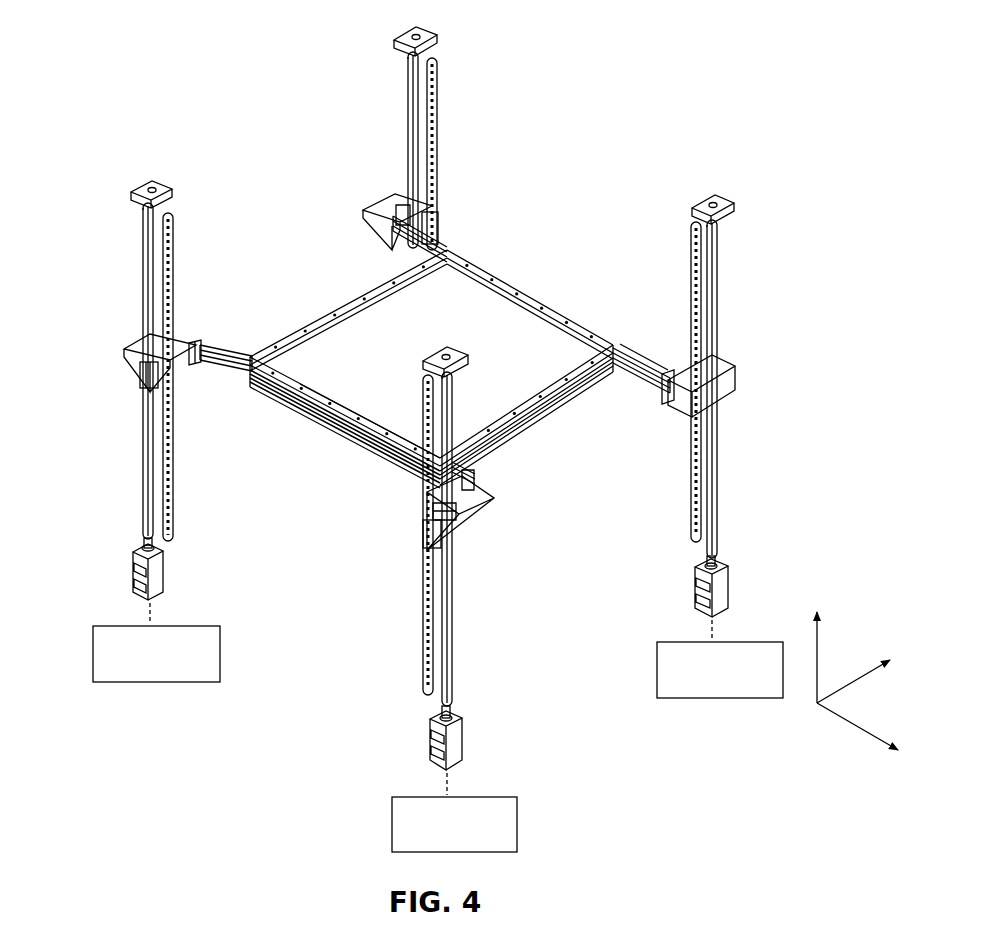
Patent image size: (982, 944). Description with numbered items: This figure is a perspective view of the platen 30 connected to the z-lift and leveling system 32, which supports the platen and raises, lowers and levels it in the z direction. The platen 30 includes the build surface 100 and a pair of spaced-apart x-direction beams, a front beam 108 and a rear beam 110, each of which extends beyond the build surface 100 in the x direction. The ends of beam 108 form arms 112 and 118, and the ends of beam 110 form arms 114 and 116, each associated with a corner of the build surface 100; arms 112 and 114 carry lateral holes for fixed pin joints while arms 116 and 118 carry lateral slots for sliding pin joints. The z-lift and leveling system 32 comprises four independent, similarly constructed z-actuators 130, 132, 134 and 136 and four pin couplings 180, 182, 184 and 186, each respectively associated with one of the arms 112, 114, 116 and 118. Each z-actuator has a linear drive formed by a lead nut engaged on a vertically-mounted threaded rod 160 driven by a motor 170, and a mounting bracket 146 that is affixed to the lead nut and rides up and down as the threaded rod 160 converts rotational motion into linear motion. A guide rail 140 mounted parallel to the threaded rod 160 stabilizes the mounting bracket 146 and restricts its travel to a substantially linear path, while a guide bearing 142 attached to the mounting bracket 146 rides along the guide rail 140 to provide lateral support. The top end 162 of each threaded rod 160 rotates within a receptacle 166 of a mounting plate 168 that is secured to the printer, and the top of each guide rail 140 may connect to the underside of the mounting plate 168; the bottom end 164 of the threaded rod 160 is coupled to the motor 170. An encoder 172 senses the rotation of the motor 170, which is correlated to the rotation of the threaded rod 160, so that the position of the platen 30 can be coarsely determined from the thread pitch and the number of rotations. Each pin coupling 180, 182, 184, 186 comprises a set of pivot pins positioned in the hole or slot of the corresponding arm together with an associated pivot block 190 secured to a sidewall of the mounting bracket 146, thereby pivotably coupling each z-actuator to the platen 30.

The platen 30 is at (352, 397).
The z-lift and leveling system 32 is at (675, 756).
The build surface 100 is at (492, 322).
The x-direction beam 108 is at (228, 372).
The x-direction beam 110 is at (646, 368).
The arm 112 is at (216, 347).
The arm 114 is at (400, 250).
The arm 116 is at (655, 360).
The arm 118 is at (470, 478).
The z-actuator 130 is at (98, 487).
The z-actuator 132 is at (338, 118).
The z-actuator 134 is at (730, 289).
The z-actuator 136 is at (458, 617).
The guide rail 140 is at (175, 520).
The guide bearing 142 is at (142, 372).
The mounting bracket 146 is at (126, 360).
The threaded rod 160 is at (143, 300).
The top end 162 is at (143, 222).
The bottom end 164 is at (140, 545).
The receptacle 166 is at (136, 190).
The mounting plate 168 is at (153, 184).
The motor 170 is at (170, 592).
The encoder 172 is at (93, 655).
The pin coupling 180 is at (203, 337).
The pin coupling 182 is at (406, 206).
The pin coupling 184 is at (672, 368).
The pin coupling 186 is at (474, 480).
The pivot block 190 is at (434, 507).